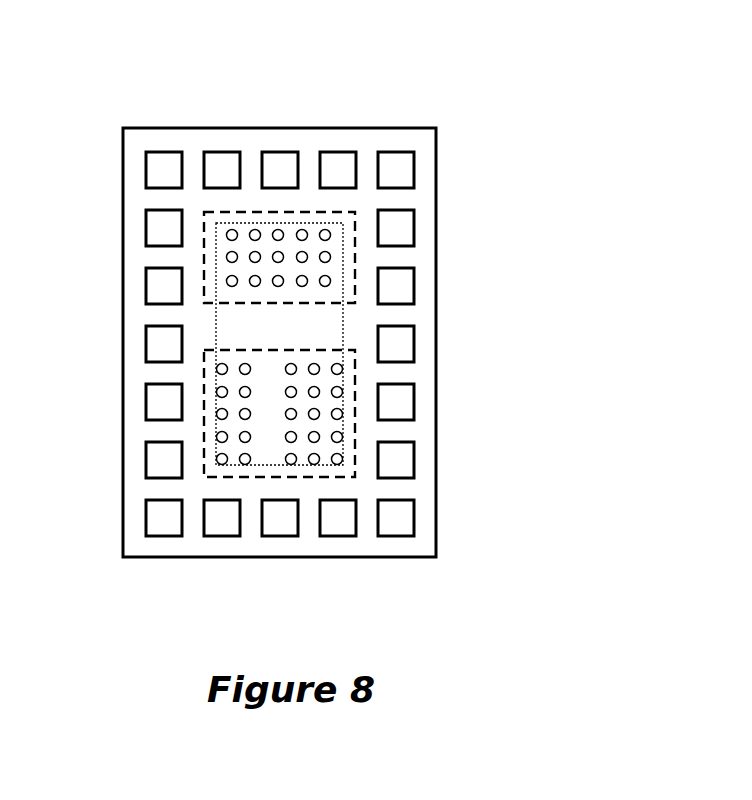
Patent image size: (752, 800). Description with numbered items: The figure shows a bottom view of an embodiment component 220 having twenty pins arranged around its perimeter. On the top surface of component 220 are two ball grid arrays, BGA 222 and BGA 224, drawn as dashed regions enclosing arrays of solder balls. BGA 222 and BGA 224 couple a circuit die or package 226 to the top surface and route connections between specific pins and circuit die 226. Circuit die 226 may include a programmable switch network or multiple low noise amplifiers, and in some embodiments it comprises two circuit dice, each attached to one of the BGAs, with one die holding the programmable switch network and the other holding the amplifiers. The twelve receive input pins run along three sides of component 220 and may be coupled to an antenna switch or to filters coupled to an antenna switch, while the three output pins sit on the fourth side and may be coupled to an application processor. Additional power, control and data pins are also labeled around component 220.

The component 220 is at (590, 143).
The ball grid array (BGA) 222 is at (355, 212).
The BGA 224 is at (355, 477).
The circuit die or package 226 is at (342, 313).